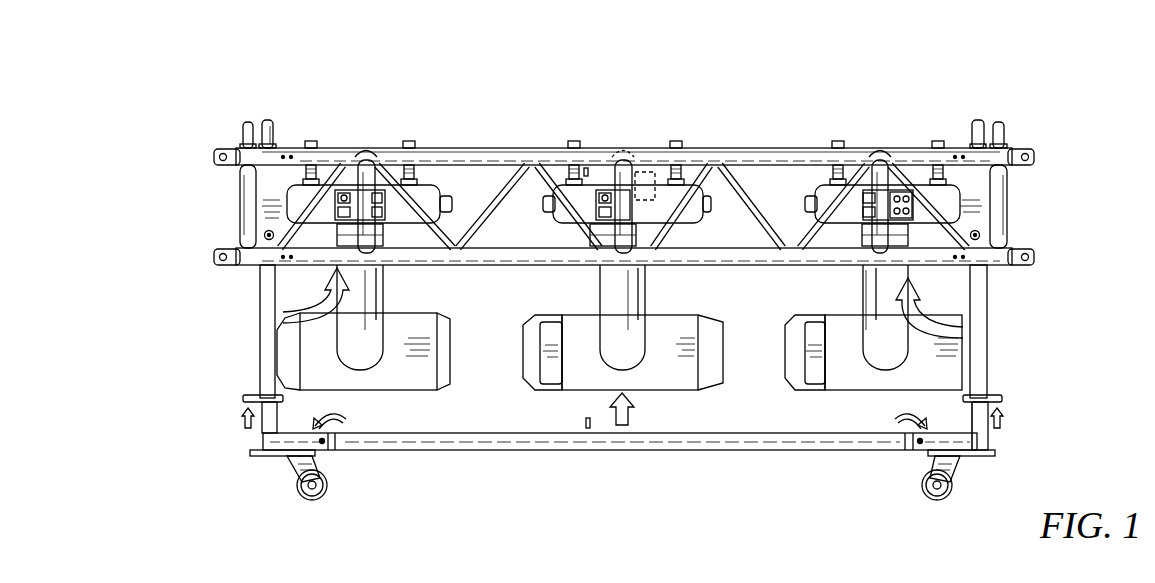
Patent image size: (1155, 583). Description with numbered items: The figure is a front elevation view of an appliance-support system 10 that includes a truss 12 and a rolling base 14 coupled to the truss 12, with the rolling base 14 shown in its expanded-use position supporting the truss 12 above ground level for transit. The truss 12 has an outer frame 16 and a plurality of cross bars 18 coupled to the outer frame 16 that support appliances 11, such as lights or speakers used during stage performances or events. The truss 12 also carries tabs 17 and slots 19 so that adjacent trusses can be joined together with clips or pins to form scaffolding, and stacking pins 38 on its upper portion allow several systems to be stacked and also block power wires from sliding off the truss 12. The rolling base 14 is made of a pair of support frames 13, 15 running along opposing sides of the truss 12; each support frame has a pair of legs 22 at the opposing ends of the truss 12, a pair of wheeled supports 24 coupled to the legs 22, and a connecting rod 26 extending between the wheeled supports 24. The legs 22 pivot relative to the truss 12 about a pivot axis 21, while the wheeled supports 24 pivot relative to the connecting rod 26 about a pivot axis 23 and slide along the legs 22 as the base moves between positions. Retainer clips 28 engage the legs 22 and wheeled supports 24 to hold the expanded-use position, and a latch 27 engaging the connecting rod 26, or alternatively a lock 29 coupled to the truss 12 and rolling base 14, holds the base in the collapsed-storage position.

The appliance-support system 10 is at (147, 112).
The appliance 11 is at (876, 403).
The truss 12 is at (790, 120).
The support frame 13 is at (997, 331).
The rolling base 14 is at (996, 290).
The support frame 15 is at (998, 366).
The outer frame 16 is at (713, 136).
The tab 17 is at (218, 136).
The cross bar 18 is at (899, 136).
The slot 19 is at (1027, 136).
The pivot axis 21 is at (266, 240).
The leg 22 is at (252, 339).
The pivot axis 23 is at (324, 444).
The wheeled support 24 is at (265, 463).
The connecting rod 26 is at (431, 460).
The latch 27 is at (649, 160).
The retainer clip 28 is at (235, 399).
The lock 29 is at (580, 425).
The stacking pin 38 is at (272, 116).